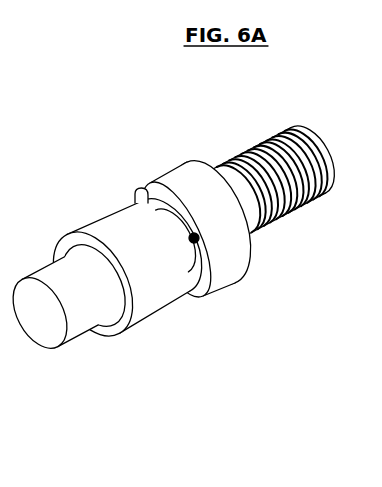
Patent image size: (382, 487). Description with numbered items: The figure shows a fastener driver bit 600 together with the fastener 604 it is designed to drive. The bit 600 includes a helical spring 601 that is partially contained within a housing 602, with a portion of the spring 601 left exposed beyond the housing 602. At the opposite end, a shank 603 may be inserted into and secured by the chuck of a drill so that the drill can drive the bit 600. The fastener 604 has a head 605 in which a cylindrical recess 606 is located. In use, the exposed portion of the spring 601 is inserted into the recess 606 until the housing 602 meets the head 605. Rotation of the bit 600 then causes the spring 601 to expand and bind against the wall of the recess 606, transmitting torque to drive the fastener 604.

The fastener driver bit 600 is at (173, 266).
The helical spring 601 is at (137, 192).
The housing 602 is at (137, 335).
The shank 603 is at (40, 263).
The fastener 604 is at (188, 128).
The head 605 is at (253, 251).
The cylindrical recess 606 is at (197, 243).